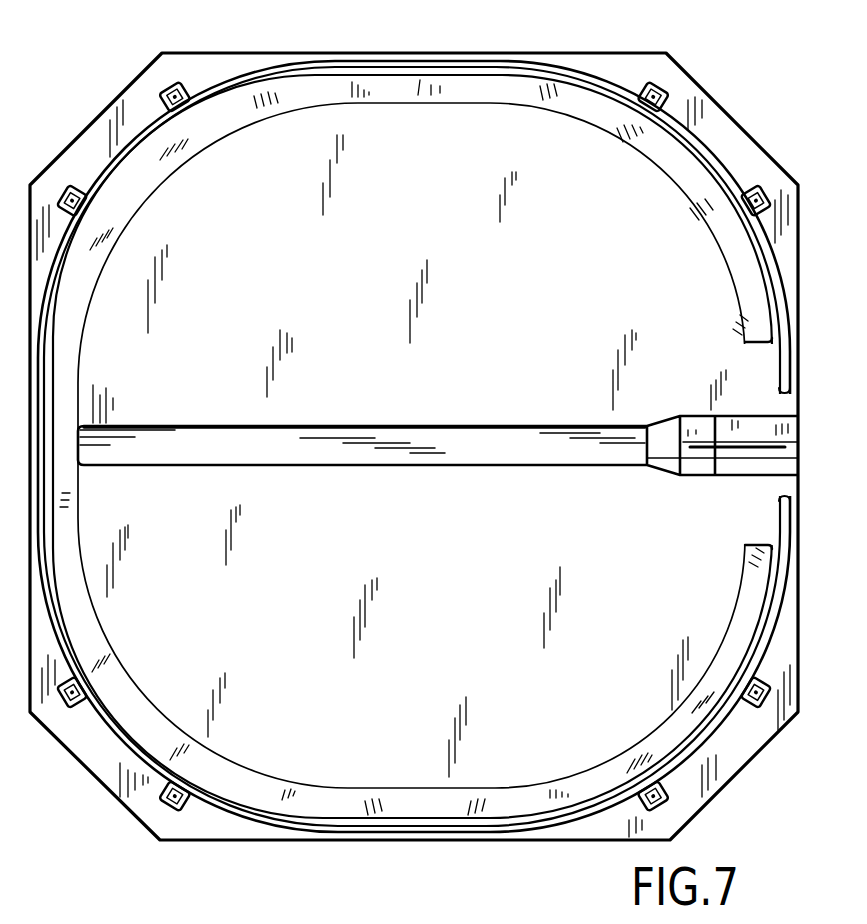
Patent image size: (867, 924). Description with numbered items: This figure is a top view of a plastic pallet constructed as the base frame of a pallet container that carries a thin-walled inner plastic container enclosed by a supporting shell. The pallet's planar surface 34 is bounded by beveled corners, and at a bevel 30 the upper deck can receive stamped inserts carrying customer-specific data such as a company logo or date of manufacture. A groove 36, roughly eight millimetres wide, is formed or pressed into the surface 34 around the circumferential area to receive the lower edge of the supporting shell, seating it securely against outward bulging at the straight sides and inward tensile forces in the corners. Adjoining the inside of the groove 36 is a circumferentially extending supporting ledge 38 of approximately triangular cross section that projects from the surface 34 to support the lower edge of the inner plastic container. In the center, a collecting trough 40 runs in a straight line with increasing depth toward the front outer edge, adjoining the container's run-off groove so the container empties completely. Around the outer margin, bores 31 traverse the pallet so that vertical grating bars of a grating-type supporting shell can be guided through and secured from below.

The bevel 30 is at (85, 123).
The bores 31 is at (762, 198).
The planar surface 34 is at (272, 295).
The groove 36 is at (777, 527).
The supporting ledge 38 is at (742, 268).
The collecting trough 40 is at (441, 441).